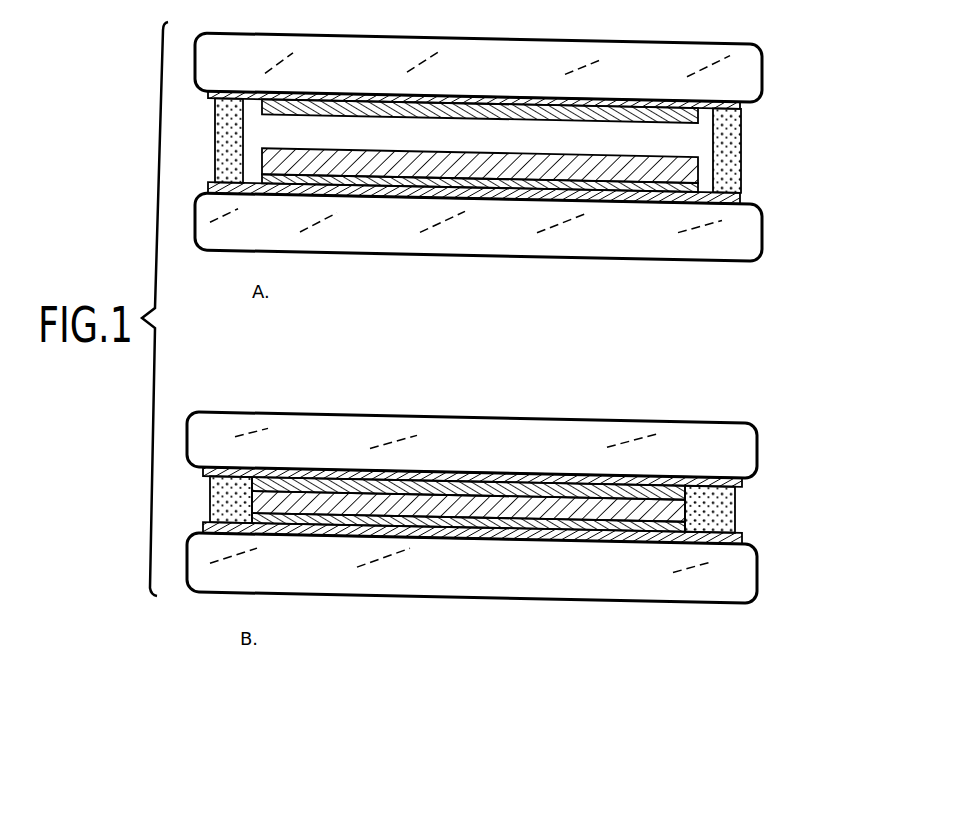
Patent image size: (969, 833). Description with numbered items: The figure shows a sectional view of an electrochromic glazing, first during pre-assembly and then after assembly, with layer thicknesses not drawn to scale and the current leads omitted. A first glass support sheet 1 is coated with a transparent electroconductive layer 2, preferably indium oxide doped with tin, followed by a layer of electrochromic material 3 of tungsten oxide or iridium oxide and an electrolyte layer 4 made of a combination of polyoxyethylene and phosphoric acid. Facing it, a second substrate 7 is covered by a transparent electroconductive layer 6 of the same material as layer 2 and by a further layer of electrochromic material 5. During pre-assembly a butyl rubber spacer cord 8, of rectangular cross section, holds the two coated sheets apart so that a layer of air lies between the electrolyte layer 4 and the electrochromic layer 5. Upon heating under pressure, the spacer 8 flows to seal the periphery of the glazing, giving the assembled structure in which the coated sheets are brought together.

In FIG. 1A, the first glass support sheet 1 is at (727, 232).
In FIG. 1A, the transparent electroconductive layer 2 is at (720, 197).
In FIG. 1A, the layer of electrochromic material 3 is at (345, 180).
In FIG. 1A, the electrolyte layer 4 is at (595, 165).
In FIG. 1A, the layer of electrochromic material 5 is at (422, 108).
In FIG. 1A, the transparent electroconductive layer 6 is at (750, 108).
In FIG. 1A, the second substrate 7 is at (740, 57).
In FIG. 1A, the butyl rubber spacer cord 8 is at (723, 138).
In FIG. 1B, the butyl rubber spacer cord 8 is at (707, 508).